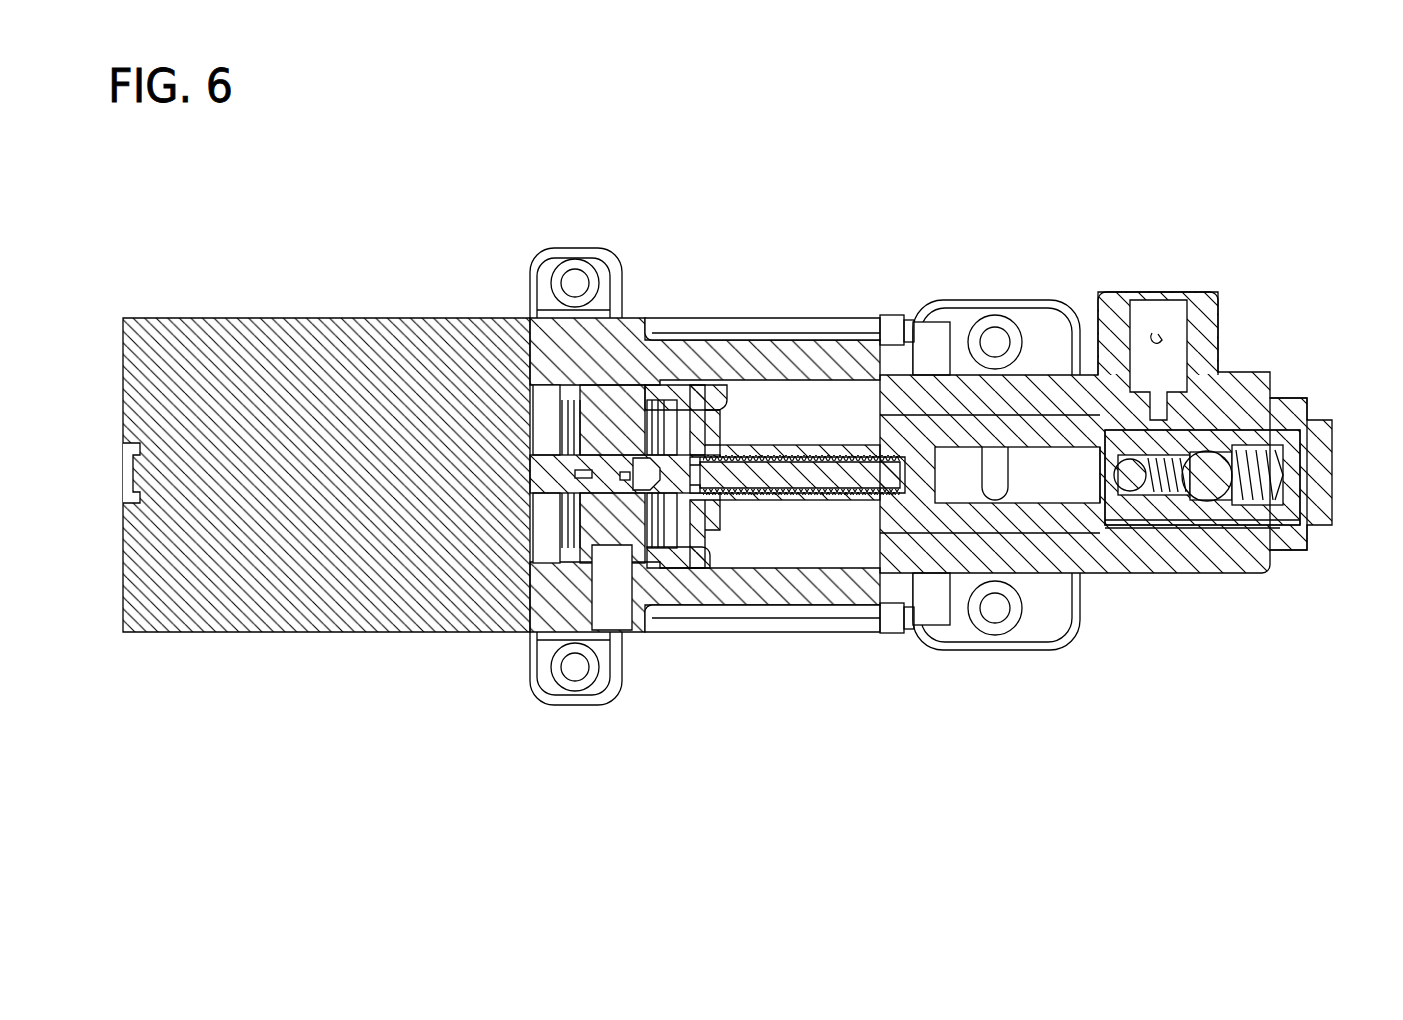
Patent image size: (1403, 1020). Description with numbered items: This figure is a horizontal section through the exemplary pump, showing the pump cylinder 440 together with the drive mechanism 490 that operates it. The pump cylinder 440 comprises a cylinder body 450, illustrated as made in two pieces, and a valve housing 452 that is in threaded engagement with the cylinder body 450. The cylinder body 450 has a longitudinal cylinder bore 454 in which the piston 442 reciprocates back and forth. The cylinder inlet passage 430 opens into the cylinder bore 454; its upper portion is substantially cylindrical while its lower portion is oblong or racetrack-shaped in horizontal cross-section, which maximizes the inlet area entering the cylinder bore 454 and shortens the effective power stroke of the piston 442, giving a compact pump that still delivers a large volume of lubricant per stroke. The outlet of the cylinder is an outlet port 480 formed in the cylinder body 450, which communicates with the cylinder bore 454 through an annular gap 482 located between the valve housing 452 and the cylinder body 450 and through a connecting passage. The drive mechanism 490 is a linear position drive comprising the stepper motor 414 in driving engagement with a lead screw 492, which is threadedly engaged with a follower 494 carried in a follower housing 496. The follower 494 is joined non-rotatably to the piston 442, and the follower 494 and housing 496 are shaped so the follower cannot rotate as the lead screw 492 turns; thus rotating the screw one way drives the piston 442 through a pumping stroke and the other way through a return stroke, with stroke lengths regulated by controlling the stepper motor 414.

The stepper motor 414 is at (282, 618).
The drive mechanism 490 is at (493, 310).
The follower housing 496 is at (622, 342).
The follower 494 is at (705, 407).
The lead screw 492 is at (773, 480).
The piston 442 is at (782, 436).
The pump cylinder 440 is at (1258, 580).
The cylinder inlet passage 430 is at (1000, 482).
The cylinder bore 454 is at (1083, 483).
The outlet port 480 is at (1160, 338).
The cylinder body 450 is at (1268, 373).
The valve housing 452 is at (1296, 398).
The annular gap 482 is at (1170, 527).